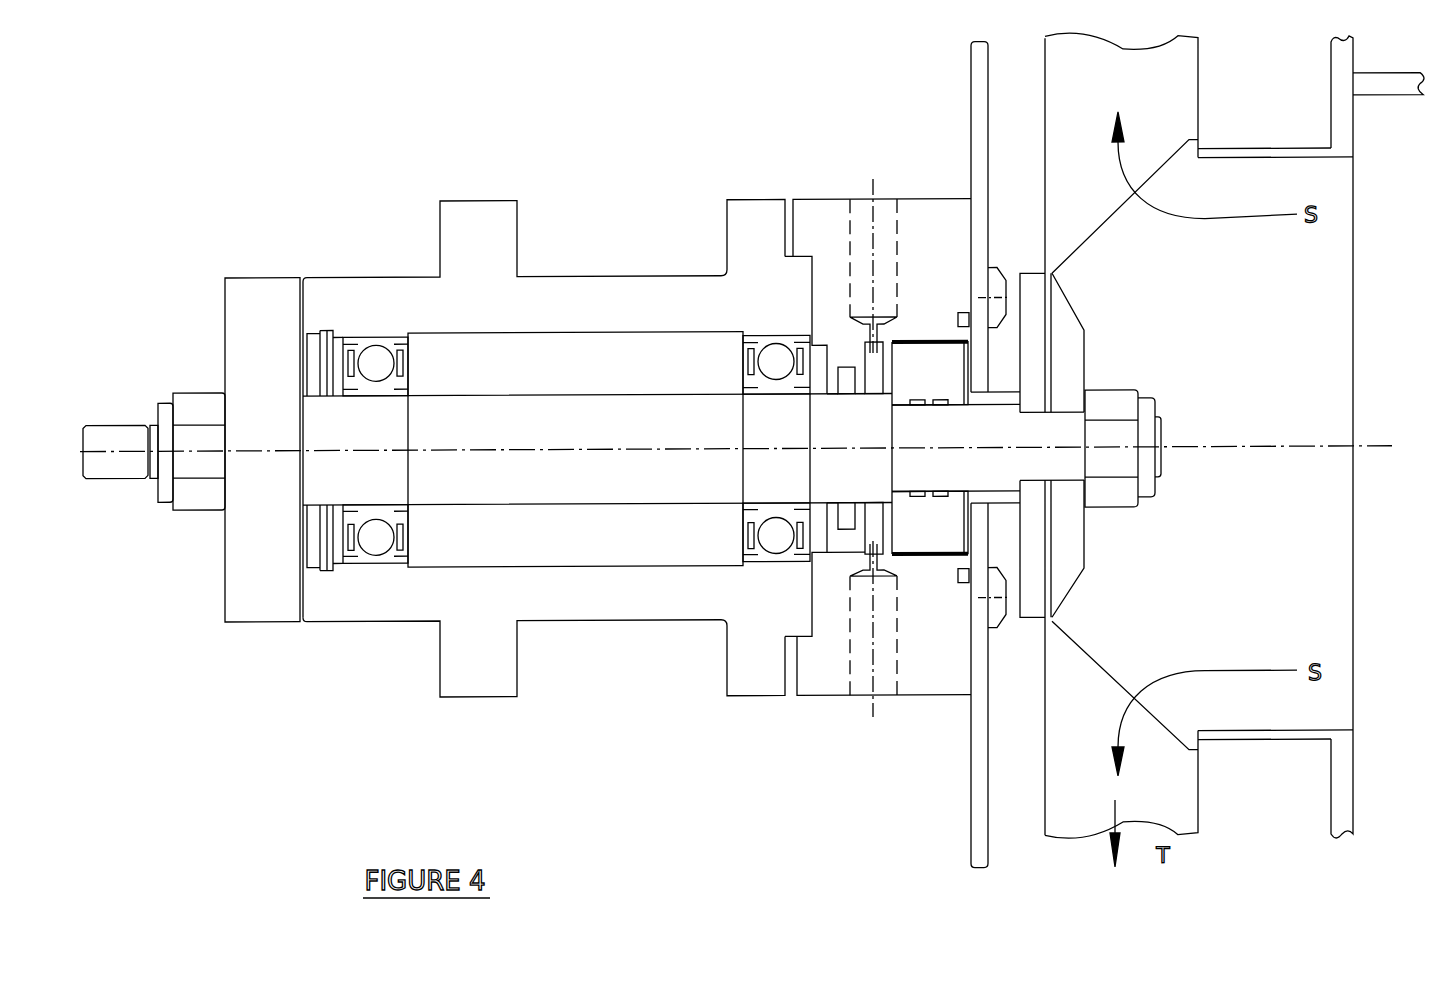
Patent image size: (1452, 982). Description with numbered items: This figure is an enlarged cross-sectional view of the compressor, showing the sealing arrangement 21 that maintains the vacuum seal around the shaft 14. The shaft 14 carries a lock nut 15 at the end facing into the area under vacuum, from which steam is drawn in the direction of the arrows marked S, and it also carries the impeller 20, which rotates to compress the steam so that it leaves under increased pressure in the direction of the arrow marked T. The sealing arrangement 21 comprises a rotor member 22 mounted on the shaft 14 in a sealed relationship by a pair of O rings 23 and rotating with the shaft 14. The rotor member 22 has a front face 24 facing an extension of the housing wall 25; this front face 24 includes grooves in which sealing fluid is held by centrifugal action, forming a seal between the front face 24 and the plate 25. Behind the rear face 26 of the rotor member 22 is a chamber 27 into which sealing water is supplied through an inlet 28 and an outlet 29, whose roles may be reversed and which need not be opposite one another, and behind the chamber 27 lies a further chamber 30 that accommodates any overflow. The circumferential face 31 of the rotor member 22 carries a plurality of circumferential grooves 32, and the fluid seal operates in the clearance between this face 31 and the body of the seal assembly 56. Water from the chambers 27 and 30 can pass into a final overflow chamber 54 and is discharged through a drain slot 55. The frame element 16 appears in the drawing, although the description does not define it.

The shaft 14 is at (106, 482).
The lock nut 15 is at (1138, 395).
The frame 16 is at (1282, 349).
The impeller 20 is at (1133, 92).
The sealing arrangement 21 is at (927, 342).
The rotor member 22 is at (921, 382).
The O rings 23 is at (950, 498).
The front face 24 is at (927, 541).
The housing wall 25 is at (987, 377).
The rear face 26 is at (880, 522).
The chamber 27 is at (860, 541).
The inlet 28 is at (863, 699).
The outlet 29 is at (850, 201).
The further chamber 30 is at (838, 534).
The circumferential face 31 is at (980, 506).
The circumferential grooves 32 is at (930, 549).
The final overflow chamber 54 is at (817, 364).
The drain slot 55 is at (807, 691).
The body of the seal assembly 56 is at (932, 201).